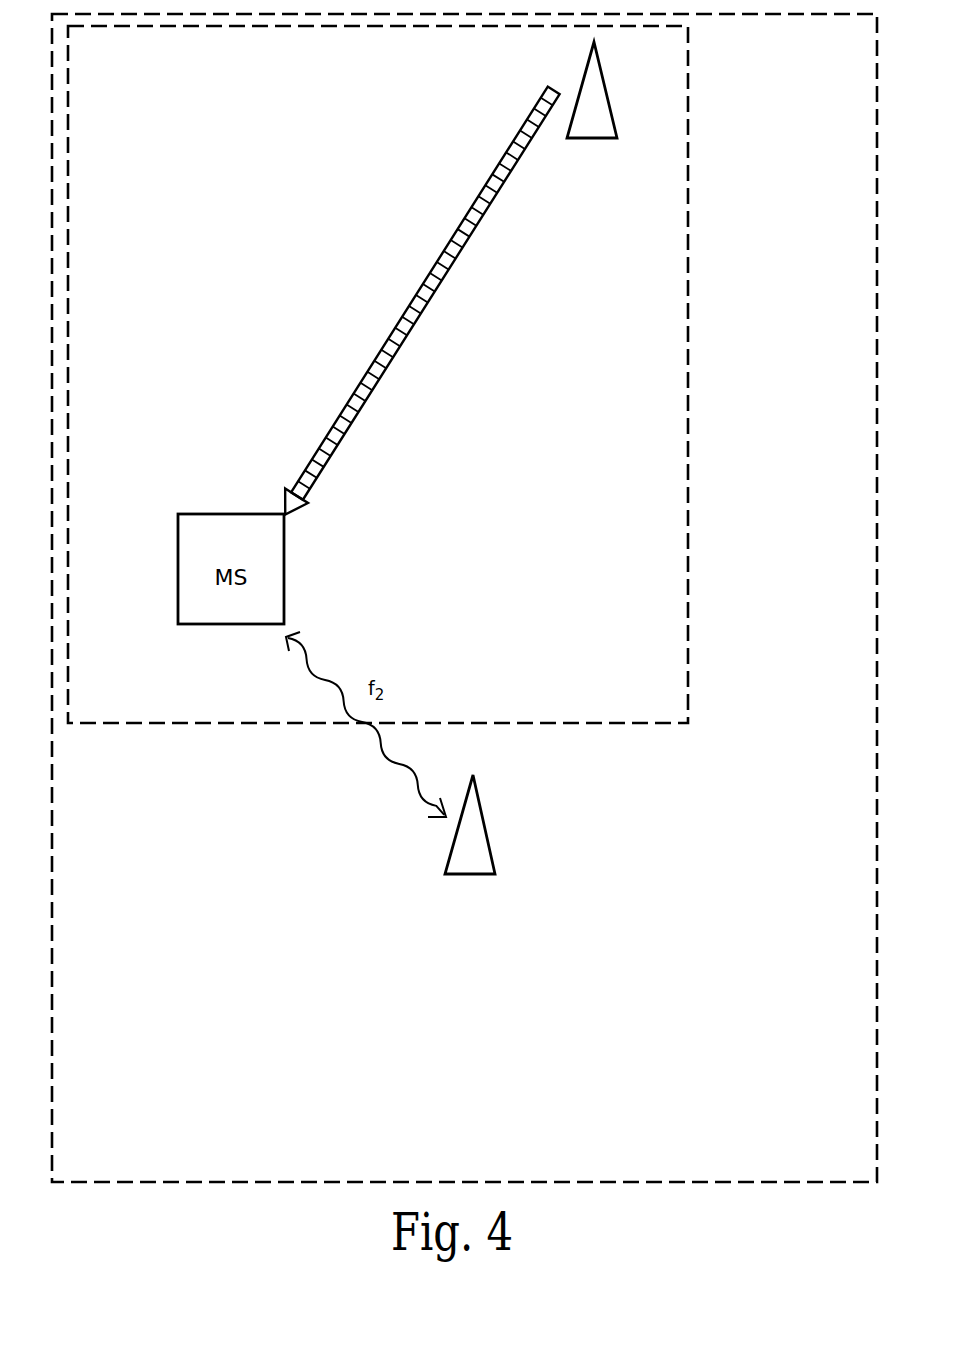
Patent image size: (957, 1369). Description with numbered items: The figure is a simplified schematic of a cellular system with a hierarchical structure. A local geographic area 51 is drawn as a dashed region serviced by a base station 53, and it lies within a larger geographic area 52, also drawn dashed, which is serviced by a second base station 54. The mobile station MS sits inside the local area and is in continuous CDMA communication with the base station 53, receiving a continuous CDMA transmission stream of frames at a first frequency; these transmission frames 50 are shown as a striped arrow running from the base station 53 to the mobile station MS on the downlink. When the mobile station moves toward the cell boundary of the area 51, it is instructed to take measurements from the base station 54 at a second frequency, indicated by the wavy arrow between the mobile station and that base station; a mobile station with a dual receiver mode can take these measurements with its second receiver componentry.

The transmission frames 50 is at (359, 410).
The geographic area 51 is at (687, 361).
The larger geographic area 52 is at (877, 399).
The base station 53 is at (611, 109).
The base station 54 is at (489, 843).